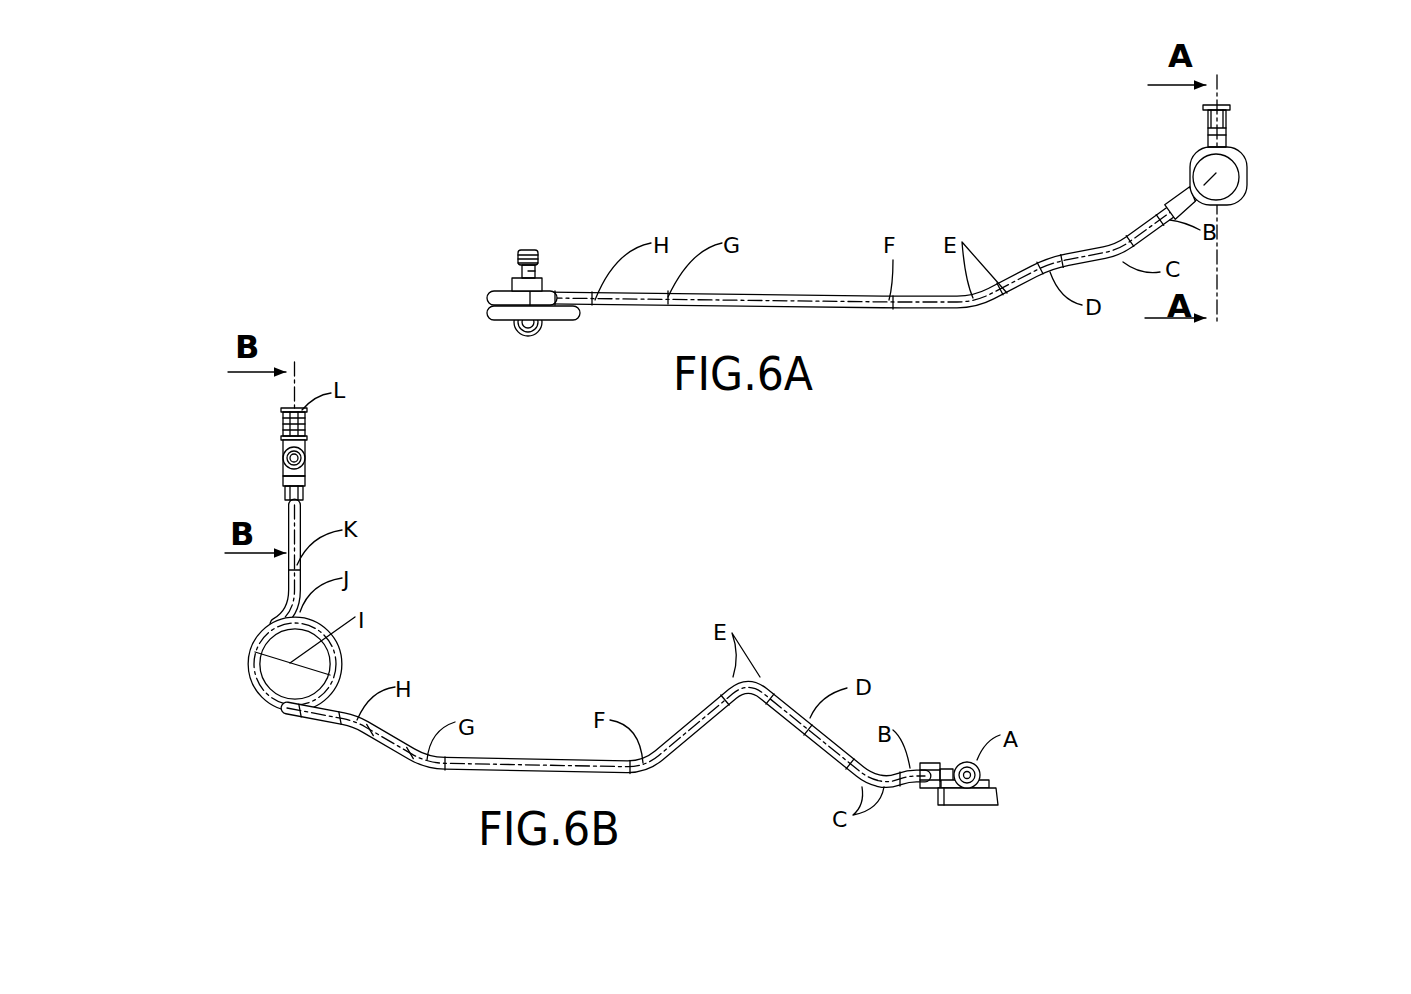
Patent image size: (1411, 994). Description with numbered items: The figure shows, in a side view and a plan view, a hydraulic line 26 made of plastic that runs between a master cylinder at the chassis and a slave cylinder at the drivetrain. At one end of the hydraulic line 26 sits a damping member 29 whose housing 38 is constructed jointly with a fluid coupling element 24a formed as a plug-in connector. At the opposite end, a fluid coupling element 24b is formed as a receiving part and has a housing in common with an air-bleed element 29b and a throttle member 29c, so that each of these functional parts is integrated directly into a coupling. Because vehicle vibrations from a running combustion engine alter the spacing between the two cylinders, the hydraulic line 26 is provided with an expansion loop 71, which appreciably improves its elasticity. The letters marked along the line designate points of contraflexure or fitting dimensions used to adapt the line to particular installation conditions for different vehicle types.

In FIG. 6A, the hydraulic line 26 is at (952, 352).
In FIG. 6B, the hydraulic line 26 is at (589, 645).
In FIG. 6A, the fluid coupling element 24a is at (1246, 111).
In FIG. 6B, the fluid coupling element 24a is at (970, 748).
In FIG. 6B, the fluid coupling element 24b is at (326, 458).
In FIG. 6A, the damping member 29 is at (1274, 133).
In FIG. 6B, the damping member 29 is at (1020, 757).
In FIG. 6A, the air-bleed element 29b is at (542, 258).
In FIG. 6B, the air-bleed element 29b is at (285, 472).
In FIG. 6B, the throttle member 29c is at (310, 485).
In FIG. 6A, the housing 38 is at (1240, 150).
In FIG. 6B, the housing 38 is at (996, 802).
In FIG. 6B, the expansion loop 71 is at (368, 660).